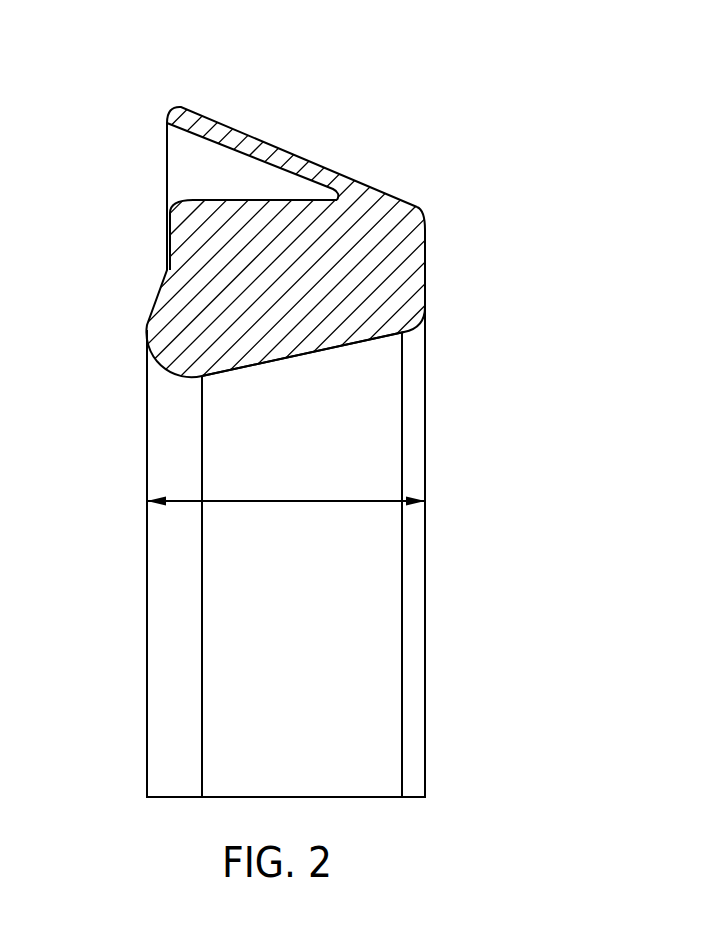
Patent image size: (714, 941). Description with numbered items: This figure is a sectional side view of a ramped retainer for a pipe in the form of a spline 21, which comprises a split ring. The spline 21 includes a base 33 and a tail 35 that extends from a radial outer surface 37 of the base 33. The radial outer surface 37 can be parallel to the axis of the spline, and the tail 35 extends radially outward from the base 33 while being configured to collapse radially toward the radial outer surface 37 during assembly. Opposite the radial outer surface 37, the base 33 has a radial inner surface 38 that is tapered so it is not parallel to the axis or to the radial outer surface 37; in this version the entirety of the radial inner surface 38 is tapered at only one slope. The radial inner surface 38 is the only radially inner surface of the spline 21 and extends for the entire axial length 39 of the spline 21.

The spline 21 is at (459, 86).
The base 33 is at (388, 277).
The tail 35 is at (223, 136).
The radial outer surface 37 is at (213, 202).
The radial inner surface 38 is at (324, 356).
The axial length 39 is at (287, 502).